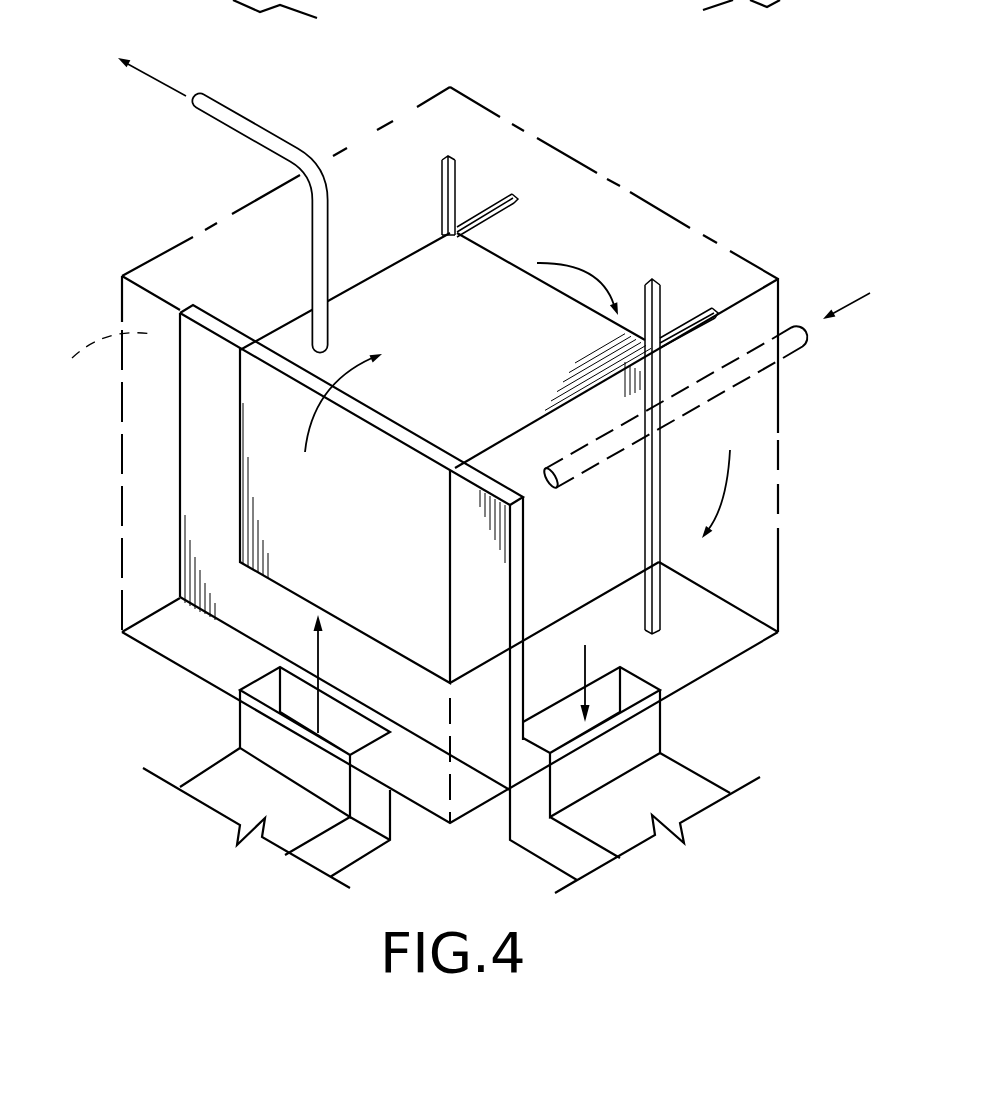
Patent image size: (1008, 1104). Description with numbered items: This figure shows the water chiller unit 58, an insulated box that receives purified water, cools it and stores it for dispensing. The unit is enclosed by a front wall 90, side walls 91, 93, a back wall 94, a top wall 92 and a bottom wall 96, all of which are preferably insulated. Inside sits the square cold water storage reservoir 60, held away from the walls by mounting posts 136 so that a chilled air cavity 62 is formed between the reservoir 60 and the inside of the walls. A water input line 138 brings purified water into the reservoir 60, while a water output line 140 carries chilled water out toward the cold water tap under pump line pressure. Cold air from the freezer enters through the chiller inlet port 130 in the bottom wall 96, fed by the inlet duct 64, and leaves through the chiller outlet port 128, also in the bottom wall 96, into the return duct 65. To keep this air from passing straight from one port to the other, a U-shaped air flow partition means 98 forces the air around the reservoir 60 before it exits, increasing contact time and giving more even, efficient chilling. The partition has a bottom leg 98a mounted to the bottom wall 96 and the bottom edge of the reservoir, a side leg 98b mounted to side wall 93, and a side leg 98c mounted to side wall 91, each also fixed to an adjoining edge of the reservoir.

The water chiller unit 58 is at (160, 228).
The cold water storage reservoir 60 is at (310, 513).
The chilled air cavity 62 is at (148, 370).
The inlet duct 64 is at (228, 784).
The return duct 65 is at (667, 793).
The front wall 90 is at (138, 314).
The side wall 91 is at (370, 190).
The top wall 92 is at (417, 143).
The side wall 93 is at (740, 527).
The back wall 94 is at (617, 217).
The bottom wall 96 is at (712, 634).
The air flow partition means 98 is at (178, 476).
The bottom leg of the partition 98a is at (280, 615).
The partition side leg 98b is at (480, 658).
The partition side leg 98c is at (205, 425).
The chiller outlet port 128 is at (607, 698).
The chiller inlet port 130 is at (295, 700).
The mounting posts 136 is at (517, 200).
The water input line 138 is at (797, 346).
The water output line 140 is at (200, 109).